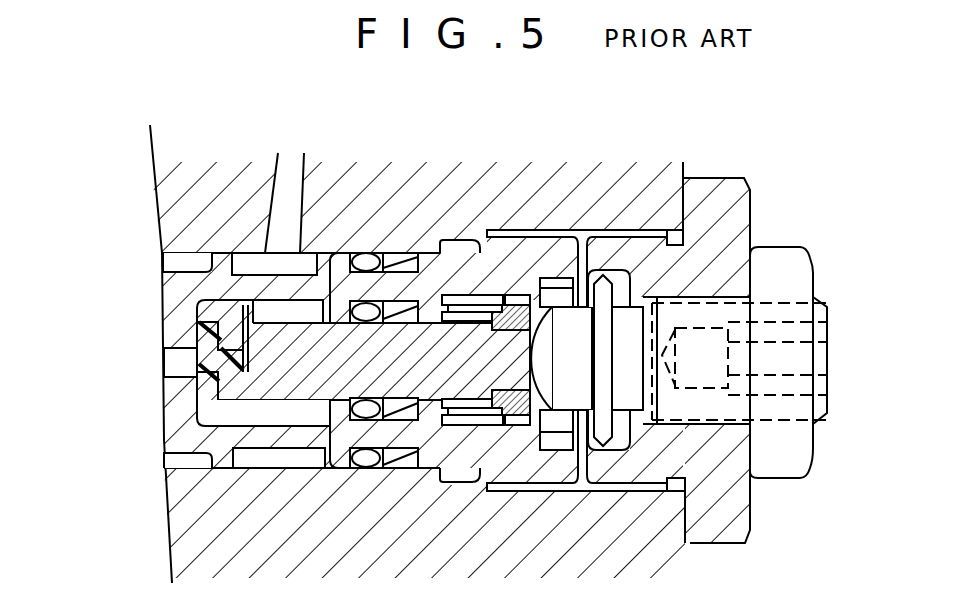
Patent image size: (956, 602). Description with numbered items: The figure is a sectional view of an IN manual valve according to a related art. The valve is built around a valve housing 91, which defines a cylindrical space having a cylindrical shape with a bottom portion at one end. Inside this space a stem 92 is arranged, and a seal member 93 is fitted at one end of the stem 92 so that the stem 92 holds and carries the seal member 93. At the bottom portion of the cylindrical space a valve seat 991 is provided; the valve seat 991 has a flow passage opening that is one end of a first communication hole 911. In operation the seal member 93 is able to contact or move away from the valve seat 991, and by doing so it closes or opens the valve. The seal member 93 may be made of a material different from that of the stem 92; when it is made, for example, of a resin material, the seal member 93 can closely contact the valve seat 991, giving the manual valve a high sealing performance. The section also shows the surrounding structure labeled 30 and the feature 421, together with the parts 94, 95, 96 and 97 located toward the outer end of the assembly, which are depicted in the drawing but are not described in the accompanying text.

The housing 30 is at (240, 190).
The valve housing 91 is at (178, 272).
The stem 92 is at (300, 342).
The seal member 93 is at (193, 383).
The valve body 94 is at (500, 272).
The fitting body 95 is at (647, 267).
The retaining ring 96 is at (467, 307).
The nut 97 is at (723, 310).
The passage 421 is at (292, 250).
The first communication hole 911 is at (180, 358).
The valve seat 991 is at (197, 328).